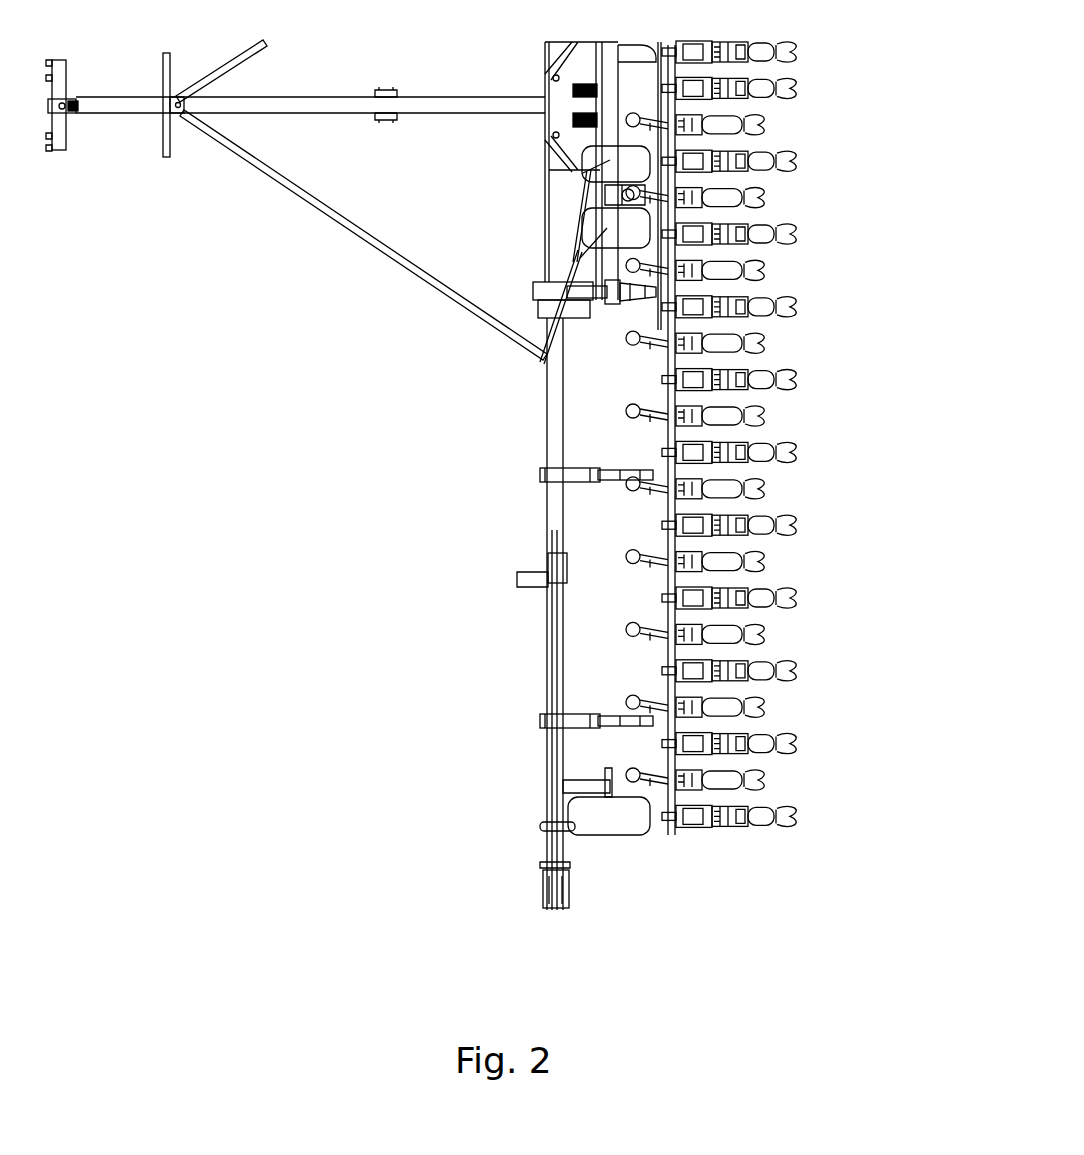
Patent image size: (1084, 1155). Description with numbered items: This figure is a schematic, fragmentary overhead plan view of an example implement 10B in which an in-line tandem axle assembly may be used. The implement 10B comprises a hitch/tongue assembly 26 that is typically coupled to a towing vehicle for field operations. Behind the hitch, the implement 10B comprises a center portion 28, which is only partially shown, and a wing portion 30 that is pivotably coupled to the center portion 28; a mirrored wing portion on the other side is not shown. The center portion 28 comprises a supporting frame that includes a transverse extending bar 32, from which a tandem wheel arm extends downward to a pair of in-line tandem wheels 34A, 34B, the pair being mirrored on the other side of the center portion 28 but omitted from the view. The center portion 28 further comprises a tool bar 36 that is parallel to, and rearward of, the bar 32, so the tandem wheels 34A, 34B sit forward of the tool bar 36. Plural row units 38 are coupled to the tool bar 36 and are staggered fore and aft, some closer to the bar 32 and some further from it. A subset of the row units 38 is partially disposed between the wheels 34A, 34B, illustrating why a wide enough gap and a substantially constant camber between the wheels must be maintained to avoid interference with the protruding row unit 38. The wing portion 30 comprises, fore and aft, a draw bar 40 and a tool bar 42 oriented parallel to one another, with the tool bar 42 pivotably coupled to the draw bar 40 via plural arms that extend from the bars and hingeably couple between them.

The implement 10B is at (503, 489).
The hitch/tongue assembly 26 is at (290, 213).
The center portion 28 is at (808, 127).
The wing portion 30 is at (793, 434).
The bar 32 is at (600, 233).
The in-line tandem wheel 34A is at (600, 152).
The in-line tandem wheel 34B is at (575, 320).
The tool bar 36 is at (770, 272).
The row units 38 is at (770, 200).
The draw bar 40 is at (550, 687).
The tool bar 42 is at (685, 835).